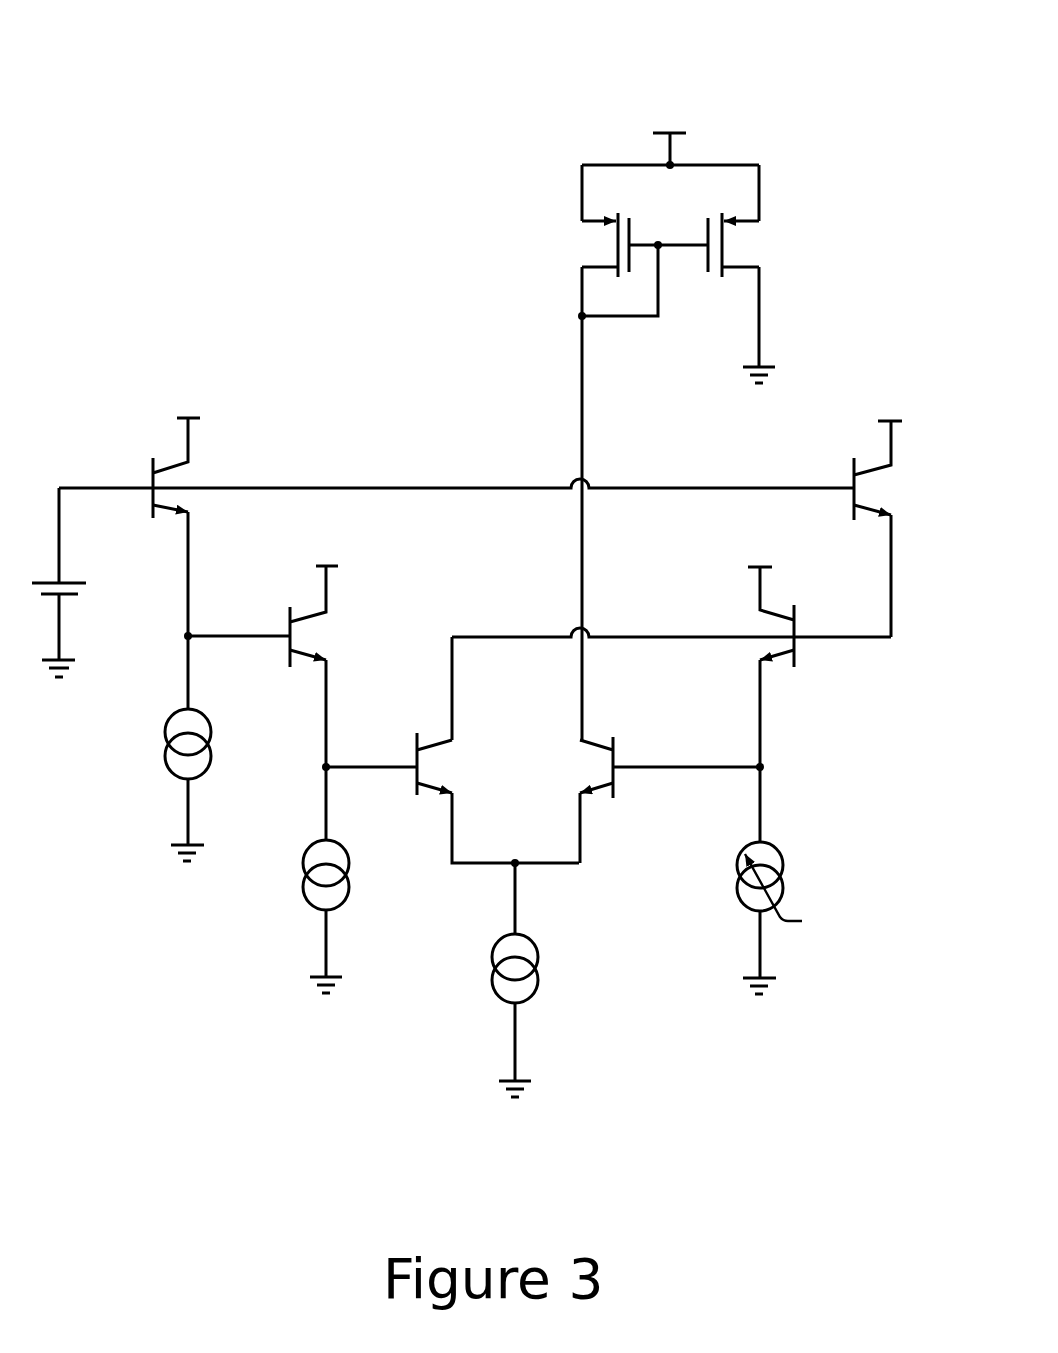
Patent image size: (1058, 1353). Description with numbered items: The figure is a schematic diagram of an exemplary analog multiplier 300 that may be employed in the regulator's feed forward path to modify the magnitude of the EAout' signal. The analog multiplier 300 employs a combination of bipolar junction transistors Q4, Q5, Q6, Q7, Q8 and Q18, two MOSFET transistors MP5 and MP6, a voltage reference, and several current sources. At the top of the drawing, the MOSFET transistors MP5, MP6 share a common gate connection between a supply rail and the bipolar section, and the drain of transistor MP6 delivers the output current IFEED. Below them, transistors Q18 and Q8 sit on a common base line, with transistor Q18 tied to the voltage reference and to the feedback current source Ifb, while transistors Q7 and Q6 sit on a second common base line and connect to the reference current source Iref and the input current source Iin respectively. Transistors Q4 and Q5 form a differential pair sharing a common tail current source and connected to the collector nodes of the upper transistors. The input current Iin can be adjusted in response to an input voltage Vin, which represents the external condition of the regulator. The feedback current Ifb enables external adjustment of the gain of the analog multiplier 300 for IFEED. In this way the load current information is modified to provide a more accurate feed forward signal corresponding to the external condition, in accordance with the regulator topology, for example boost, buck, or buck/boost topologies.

The analog multiplier 300 is at (600, 40).
The MOSFET transistor MP5 is at (589, 477).
The MOSFET transistor MP6 is at (734, 290).
The feed forward current IFEED is at (797, 319).
The bipolar junction transistor Q18 is at (199, 564).
The bipolar junction transistor Q7 is at (263, 703).
The bipolar junction transistor Q4 is at (452, 798).
The bipolar junction transistor Q5 is at (670, 800).
The bipolar junction transistor Q6 is at (782, 704).
The bipolar junction transistor Q8 is at (889, 529).
The feedback current Ifb is at (167, 785).
The reference current Iref is at (298, 916).
The input current Iin is at (775, 906).
The input voltage Vin is at (795, 894).